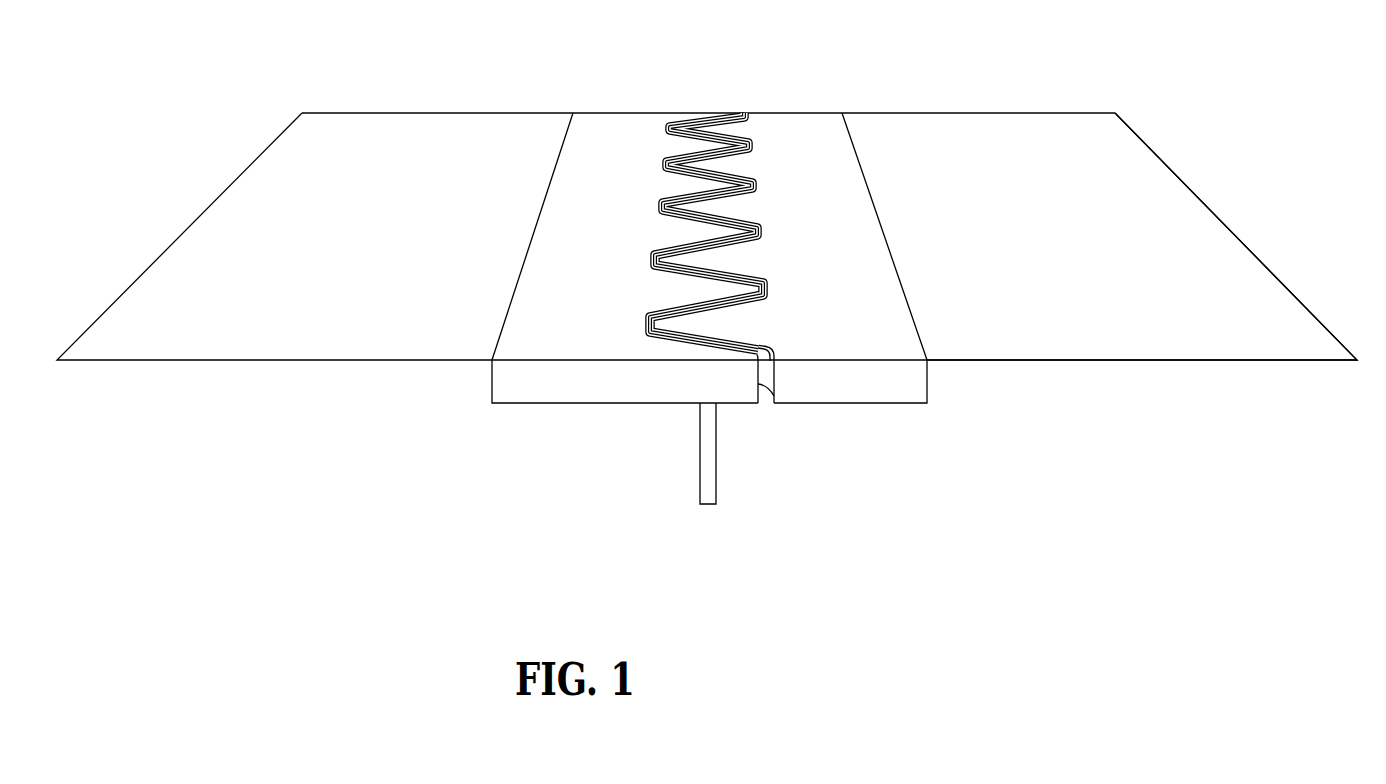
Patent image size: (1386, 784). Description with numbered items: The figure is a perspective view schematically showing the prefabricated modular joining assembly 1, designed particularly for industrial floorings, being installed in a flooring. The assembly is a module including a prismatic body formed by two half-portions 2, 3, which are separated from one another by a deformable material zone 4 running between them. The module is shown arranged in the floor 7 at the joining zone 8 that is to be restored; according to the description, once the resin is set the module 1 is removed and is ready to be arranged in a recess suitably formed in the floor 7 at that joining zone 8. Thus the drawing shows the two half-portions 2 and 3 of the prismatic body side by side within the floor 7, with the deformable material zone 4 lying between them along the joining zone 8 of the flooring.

The prefabricated modular joining assembly 1 is at (828, 113).
The half-portion 2 is at (617, 137).
The half-portion 3 is at (810, 160).
The deformable material zone 4 is at (760, 287).
The floor 7 is at (1020, 138).
The joining zone 8 is at (716, 458).